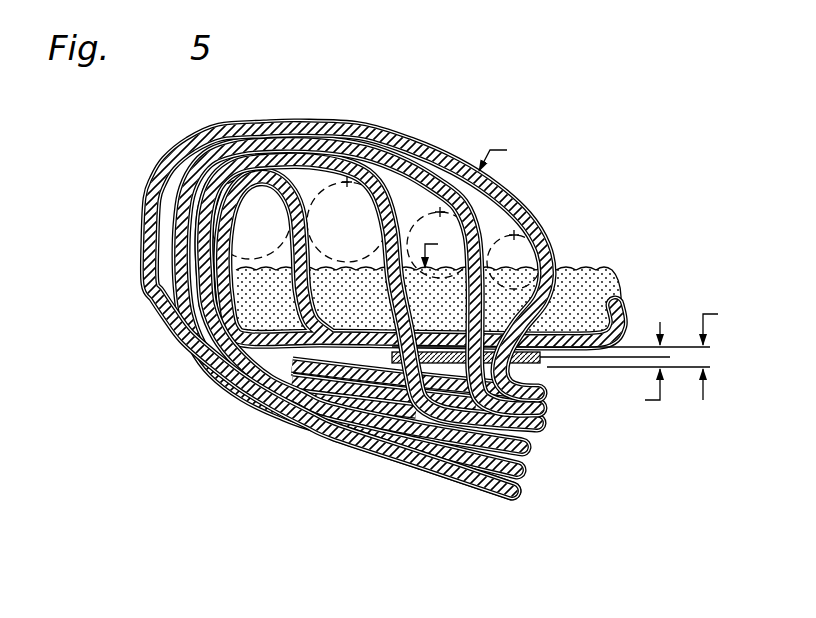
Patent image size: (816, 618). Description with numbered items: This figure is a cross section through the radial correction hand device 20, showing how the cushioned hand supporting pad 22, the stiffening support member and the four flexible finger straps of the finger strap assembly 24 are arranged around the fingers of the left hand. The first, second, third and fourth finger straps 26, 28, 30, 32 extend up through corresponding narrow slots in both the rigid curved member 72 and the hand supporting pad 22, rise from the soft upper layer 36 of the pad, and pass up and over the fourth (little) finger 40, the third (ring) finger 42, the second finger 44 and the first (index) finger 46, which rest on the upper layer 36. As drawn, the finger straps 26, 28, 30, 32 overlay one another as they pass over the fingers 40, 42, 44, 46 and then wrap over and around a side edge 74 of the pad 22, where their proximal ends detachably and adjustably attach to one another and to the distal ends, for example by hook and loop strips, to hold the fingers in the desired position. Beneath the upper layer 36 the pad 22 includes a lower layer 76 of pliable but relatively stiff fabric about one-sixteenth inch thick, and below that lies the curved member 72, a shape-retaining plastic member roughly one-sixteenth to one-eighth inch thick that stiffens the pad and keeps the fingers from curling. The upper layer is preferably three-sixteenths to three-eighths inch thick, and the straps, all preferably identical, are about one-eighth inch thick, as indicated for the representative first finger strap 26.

The radial correction hand device 20 is at (394, 323).
The hand supporting pad 22 is at (590, 266).
The finger strap assembly 24 is at (365, 356).
The first finger strap 26 is at (468, 497).
The second finger strap 28 is at (521, 496).
The third finger strap 30 is at (522, 462).
The fourth finger strap 32 is at (541, 437).
The upper layer 36 is at (603, 322).
The fourth finger 40 is at (516, 233).
The third finger 42 is at (435, 208).
The second finger 44 is at (346, 180).
The first finger 46 is at (266, 126).
The curved member 72 is at (549, 368).
The side edge 74 is at (194, 250).
The lower layer 76 is at (596, 354).